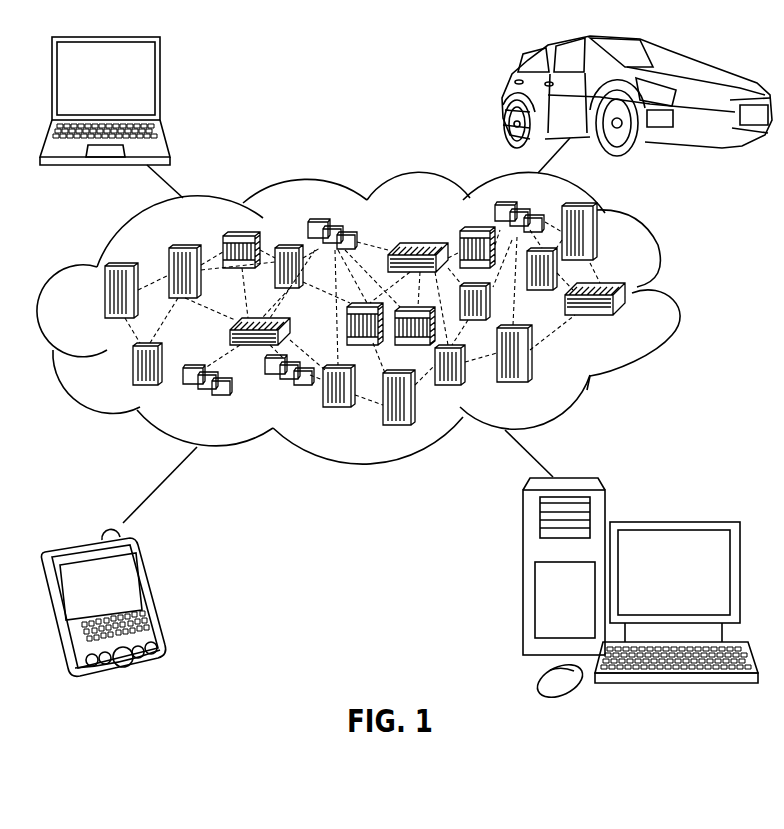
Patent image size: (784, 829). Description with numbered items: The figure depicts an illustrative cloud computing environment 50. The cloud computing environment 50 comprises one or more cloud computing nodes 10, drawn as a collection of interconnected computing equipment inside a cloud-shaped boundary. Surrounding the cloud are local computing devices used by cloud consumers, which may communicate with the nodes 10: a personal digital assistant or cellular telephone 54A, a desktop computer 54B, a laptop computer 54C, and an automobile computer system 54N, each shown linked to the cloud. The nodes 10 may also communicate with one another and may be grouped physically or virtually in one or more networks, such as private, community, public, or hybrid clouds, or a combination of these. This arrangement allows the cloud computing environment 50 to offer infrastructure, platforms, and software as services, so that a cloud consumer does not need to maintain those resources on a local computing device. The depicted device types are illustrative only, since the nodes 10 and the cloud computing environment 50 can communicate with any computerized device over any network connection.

The cloud computing nodes 10 is at (627, 320).
The cloud computing environment 50 is at (670, 293).
The personal digital assistant or cellular telephone 54A is at (152, 593).
The desktop computer 54B is at (672, 521).
The laptop computer 54C is at (164, 85).
The automobile computer system 54N is at (500, 96).